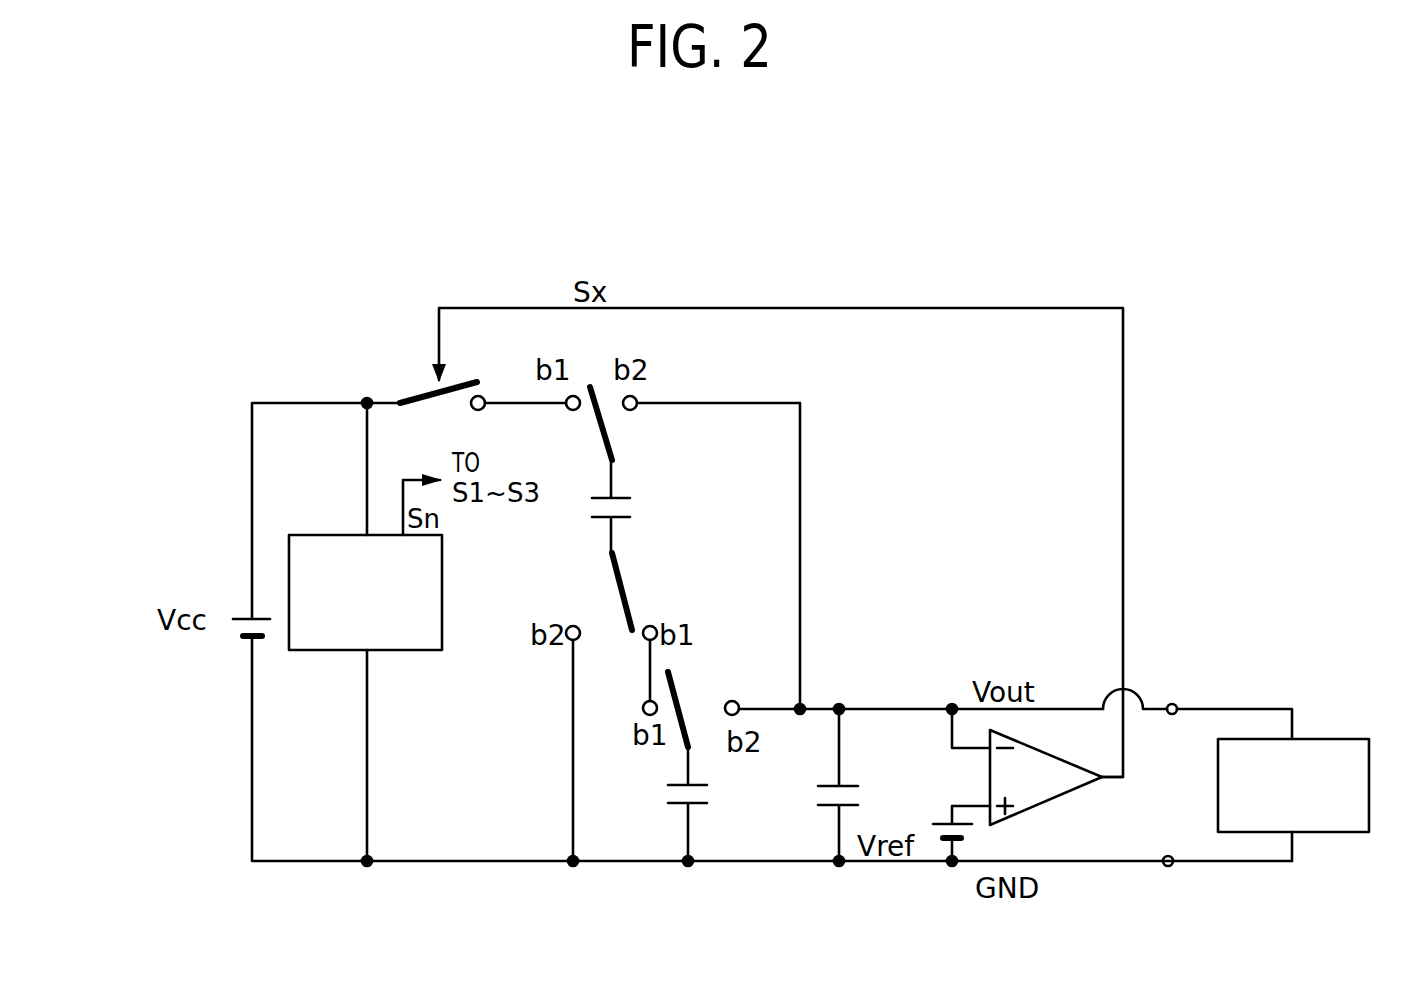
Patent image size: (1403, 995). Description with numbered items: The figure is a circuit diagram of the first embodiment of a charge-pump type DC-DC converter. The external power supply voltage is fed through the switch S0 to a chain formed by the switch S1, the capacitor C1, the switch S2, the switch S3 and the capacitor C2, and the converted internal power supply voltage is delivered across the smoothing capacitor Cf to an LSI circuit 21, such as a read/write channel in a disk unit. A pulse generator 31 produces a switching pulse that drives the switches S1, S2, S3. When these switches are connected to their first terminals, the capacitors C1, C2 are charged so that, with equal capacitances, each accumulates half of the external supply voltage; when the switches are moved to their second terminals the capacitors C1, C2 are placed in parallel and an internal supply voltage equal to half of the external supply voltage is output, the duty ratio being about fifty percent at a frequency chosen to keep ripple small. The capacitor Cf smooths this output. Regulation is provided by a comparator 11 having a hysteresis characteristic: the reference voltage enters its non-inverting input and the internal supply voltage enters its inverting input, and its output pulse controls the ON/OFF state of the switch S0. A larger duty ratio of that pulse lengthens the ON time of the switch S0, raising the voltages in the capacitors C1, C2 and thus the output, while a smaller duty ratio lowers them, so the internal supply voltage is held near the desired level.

The comparator 11 is at (1040, 803).
The LSI circuit 21 is at (1346, 739).
The pulse generator 31 is at (425, 652).
The switch S0 is at (511, 387).
The switch S1 is at (618, 437).
The switch S2 is at (634, 598).
The switch S3 is at (667, 727).
The capacitor C1 is at (593, 506).
The capacitor C2 is at (709, 804).
The smoothing capacitor Cf is at (855, 785).